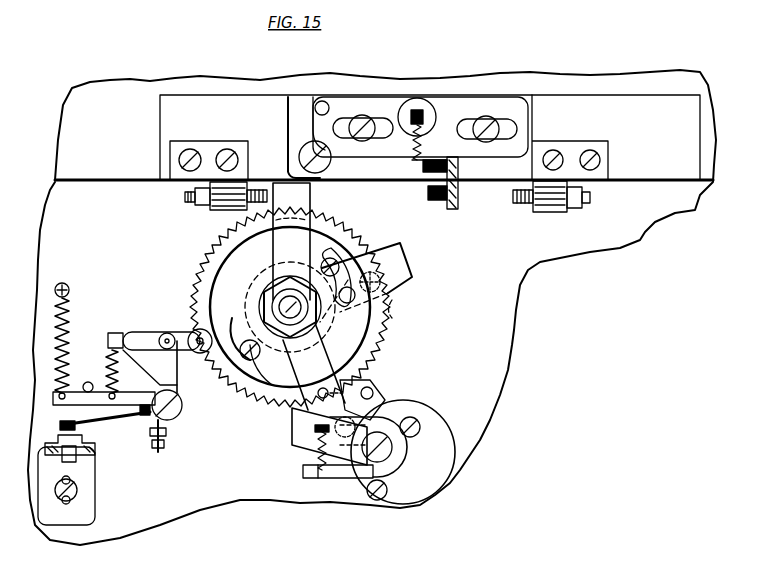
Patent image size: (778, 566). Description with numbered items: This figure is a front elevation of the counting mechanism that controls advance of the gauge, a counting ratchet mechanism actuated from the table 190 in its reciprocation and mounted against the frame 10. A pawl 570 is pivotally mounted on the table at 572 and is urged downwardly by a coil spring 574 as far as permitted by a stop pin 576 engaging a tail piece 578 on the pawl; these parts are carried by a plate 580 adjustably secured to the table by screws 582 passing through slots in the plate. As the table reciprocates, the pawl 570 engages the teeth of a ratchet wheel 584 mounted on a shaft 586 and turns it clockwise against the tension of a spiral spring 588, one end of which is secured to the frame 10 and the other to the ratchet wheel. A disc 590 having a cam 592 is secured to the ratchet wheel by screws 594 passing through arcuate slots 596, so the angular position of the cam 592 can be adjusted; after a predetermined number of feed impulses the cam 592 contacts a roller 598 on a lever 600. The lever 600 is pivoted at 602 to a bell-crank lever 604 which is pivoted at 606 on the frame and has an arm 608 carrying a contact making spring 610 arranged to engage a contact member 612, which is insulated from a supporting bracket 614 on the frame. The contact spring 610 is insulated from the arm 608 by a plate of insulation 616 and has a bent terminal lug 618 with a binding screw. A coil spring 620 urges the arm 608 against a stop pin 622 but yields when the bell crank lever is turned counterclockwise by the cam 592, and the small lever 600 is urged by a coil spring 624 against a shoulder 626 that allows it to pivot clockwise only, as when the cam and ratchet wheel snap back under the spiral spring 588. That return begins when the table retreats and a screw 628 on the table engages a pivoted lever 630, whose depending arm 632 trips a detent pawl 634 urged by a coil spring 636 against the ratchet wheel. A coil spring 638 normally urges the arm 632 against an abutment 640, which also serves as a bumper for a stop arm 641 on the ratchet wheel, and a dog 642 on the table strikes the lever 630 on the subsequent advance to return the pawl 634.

The frame 10 is at (512, 288).
The table 190 is at (707, 158).
The pawl 570 is at (460, 203).
The pivot 572 is at (302, 152).
The coil spring 574 is at (426, 145).
The stop pin 576 is at (326, 106).
The tail piece 578 is at (302, 100).
The plate 580 is at (420, 132).
The screws 582 is at (486, 116).
The ratchet wheel 584 is at (330, 225).
The shaft 586 is at (268, 298).
The spiral spring 588 is at (212, 243).
The disc 590 is at (388, 315).
The cam 592 is at (262, 392).
The screws 594 is at (372, 270).
The arcuate slots 596 is at (345, 250).
The roller 598 is at (167, 332).
The lever 600 is at (142, 332).
The pivot 602 is at (192, 330).
The bell-crank lever 604 is at (180, 375).
The pivot 606 is at (180, 408).
The arm 608 is at (108, 415).
The contact making spring 610 is at (85, 430).
The contact member 612 is at (68, 443).
The supporting bracket 614 is at (95, 481).
The plate of insulation 616 is at (62, 414).
The bent terminal lug 618 is at (163, 444).
The coil spring 620 is at (68, 330).
The stop pin 622 is at (86, 382).
The coil spring 624 is at (108, 340).
The shoulder 626 is at (115, 357).
The screw 628 is at (278, 174).
The pivoted lever 630 is at (291, 241).
The depending arm 632 is at (319, 380).
The detent pawl 634 is at (298, 424).
The coil spring 636 is at (312, 455).
The coil spring 638 is at (365, 378).
The abutment 640 is at (378, 392).
The stop arm 641 is at (396, 248).
The dog 642 is at (512, 210).